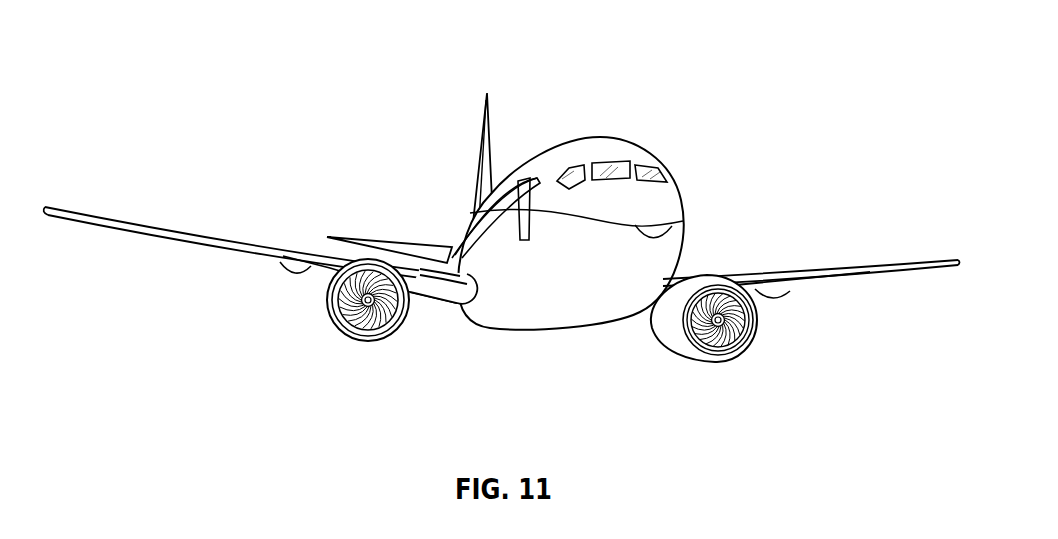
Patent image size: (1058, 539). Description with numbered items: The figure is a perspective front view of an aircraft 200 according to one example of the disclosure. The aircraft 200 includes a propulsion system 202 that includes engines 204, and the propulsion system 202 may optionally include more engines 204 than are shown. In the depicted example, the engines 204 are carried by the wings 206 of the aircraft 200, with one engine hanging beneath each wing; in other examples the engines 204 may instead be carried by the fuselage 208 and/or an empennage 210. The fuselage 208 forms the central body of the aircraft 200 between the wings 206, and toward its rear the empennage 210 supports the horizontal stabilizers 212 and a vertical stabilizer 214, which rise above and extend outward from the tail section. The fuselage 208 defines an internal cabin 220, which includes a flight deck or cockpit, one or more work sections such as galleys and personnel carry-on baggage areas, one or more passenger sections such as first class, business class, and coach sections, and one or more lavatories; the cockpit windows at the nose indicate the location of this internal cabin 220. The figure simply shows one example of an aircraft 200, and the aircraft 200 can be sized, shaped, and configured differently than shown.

The aircraft 200 is at (502, 217).
The propulsion system 202 is at (502, 253).
The engines 204 is at (365, 342).
The wings 206 is at (167, 228).
The fuselage 208 is at (596, 204).
The empennage 210 is at (475, 218).
The horizontal stabilizers 212 is at (360, 235).
The vertical stabilizer 214 is at (485, 125).
The internal cabin 220 is at (607, 165).